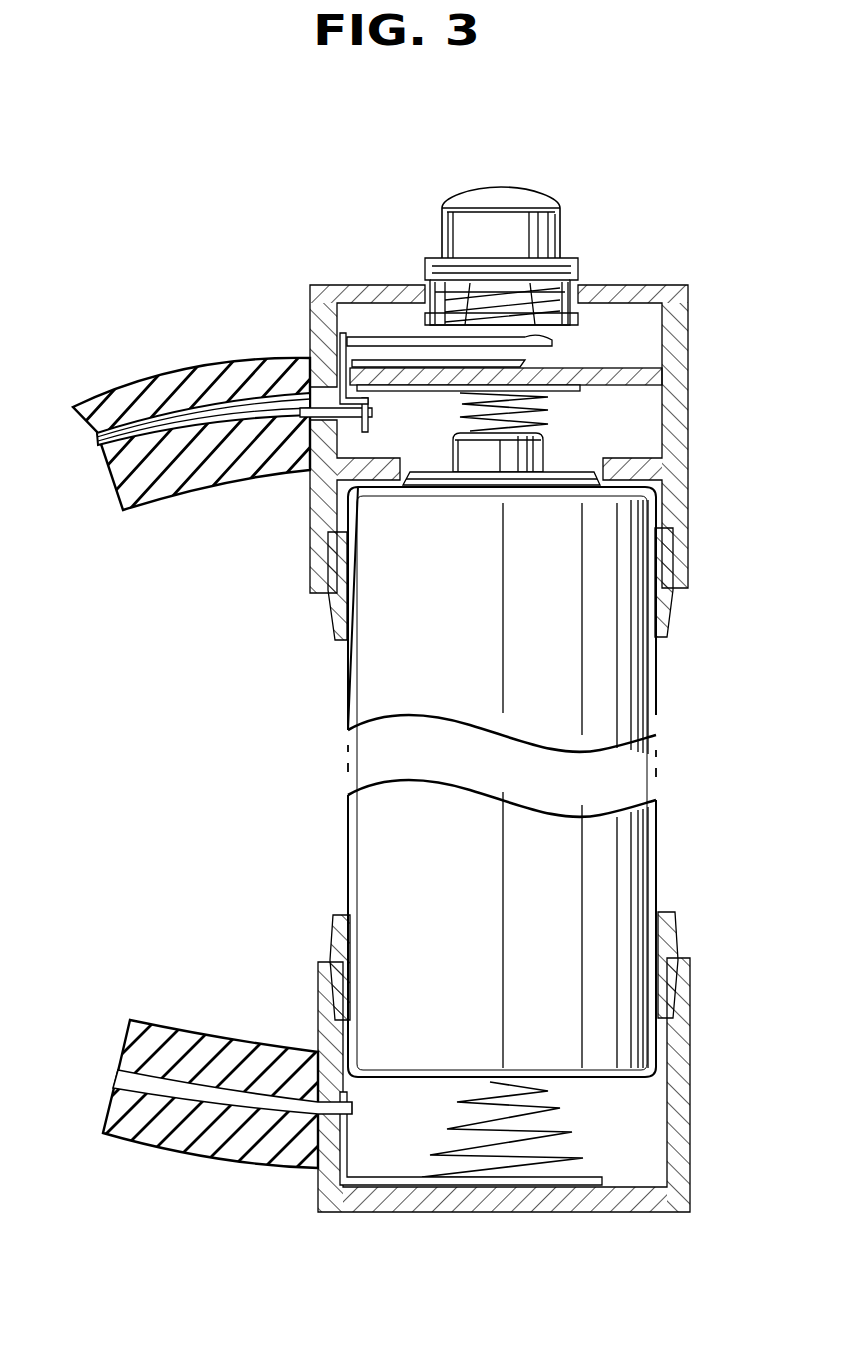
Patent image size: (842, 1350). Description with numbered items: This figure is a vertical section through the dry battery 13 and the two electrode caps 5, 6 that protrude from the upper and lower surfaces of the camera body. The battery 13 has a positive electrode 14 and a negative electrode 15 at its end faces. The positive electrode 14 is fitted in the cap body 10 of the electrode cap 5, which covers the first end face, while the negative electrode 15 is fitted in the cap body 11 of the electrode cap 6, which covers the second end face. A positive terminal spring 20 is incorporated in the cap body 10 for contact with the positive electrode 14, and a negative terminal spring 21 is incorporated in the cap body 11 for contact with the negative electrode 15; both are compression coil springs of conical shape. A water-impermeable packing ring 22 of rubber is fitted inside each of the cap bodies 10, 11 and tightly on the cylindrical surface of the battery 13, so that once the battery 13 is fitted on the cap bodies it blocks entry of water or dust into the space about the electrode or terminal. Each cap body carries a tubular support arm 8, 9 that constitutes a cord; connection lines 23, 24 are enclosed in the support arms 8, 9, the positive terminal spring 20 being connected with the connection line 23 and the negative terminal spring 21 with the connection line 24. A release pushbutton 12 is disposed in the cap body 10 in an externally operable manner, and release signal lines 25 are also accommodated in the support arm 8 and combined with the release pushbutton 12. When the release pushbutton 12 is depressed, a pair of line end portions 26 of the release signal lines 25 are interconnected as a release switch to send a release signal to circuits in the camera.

The electrode cap 5 is at (306, 272).
The electrode cap 6 is at (300, 1225).
The tubular support arm 8 is at (235, 368).
The tubular support arm 9 is at (193, 1143).
The cap body 10 is at (378, 293).
The cap body 11 is at (633, 1200).
The release pushbutton 12 is at (495, 222).
The dry battery 13 is at (365, 702).
The positive electrode 14 is at (543, 449).
The negative electrode 15 is at (611, 1082).
The positive terminal spring 20 is at (462, 403).
The negative terminal spring 21 is at (448, 1126).
The water-impermeable packing ring 22 is at (326, 612).
The connection line 23 is at (257, 425).
The connection line 24 is at (238, 1103).
The release signal lines 25 is at (160, 425).
The line end portions 26 is at (555, 343).